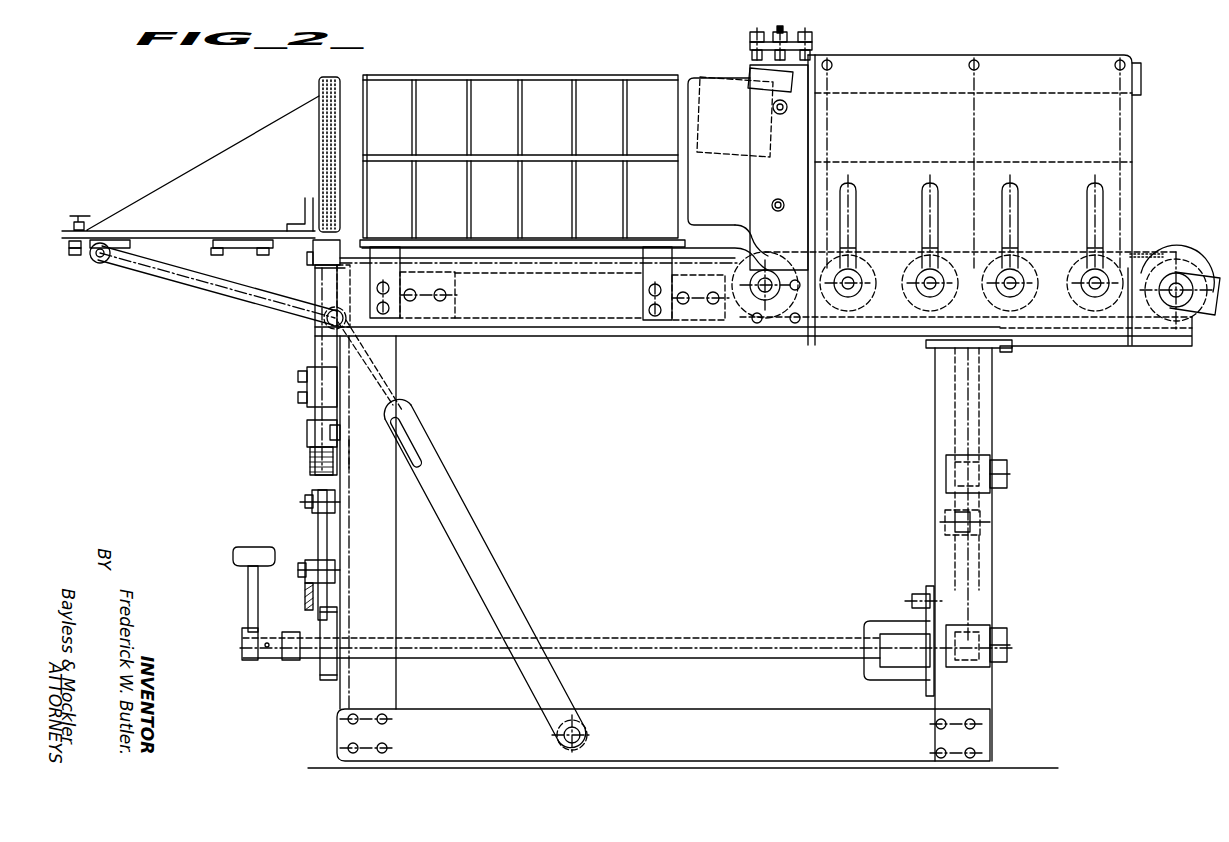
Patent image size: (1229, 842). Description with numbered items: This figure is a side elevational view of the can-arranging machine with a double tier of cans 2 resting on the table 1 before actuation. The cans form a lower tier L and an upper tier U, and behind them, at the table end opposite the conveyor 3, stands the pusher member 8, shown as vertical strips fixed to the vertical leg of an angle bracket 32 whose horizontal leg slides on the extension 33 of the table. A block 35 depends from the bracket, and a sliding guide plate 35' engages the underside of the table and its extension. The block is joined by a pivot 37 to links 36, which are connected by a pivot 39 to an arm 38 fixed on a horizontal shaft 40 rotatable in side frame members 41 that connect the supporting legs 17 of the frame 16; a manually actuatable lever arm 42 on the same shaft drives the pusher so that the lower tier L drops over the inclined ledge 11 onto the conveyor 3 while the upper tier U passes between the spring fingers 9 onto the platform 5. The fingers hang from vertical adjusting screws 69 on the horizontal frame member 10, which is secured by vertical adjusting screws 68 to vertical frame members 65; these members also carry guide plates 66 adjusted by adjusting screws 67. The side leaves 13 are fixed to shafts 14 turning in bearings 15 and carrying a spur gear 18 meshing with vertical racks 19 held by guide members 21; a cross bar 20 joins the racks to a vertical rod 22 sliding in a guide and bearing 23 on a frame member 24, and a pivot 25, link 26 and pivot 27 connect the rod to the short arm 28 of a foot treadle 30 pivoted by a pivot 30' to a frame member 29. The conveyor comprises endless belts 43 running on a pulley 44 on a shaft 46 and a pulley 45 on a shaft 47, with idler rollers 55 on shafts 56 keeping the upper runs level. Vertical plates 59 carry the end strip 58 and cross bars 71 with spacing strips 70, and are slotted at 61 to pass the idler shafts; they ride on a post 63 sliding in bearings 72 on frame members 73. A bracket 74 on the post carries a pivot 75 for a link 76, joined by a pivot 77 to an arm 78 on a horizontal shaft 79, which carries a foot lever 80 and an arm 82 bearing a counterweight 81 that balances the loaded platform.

The table 1 is at (604, 259).
The cans 2 is at (538, 177).
The conveyor 3 is at (1133, 250).
The platform 5 is at (1126, 165).
The pusher member 8 is at (319, 133).
The spring fingers 9 is at (712, 80).
The horizontal frame member 10 is at (752, 46).
The inclined ledge 11 is at (752, 238).
The side leaves 13 is at (563, 242).
The shafts 14 is at (539, 259).
The bearings 15 is at (447, 306).
The frame 16 is at (583, 338).
The supporting legs 17 is at (397, 578).
The spur gear 18 is at (335, 240).
The vertical racks 19 is at (315, 352).
The cross bar 20 is at (300, 386).
The guide members 21 is at (318, 278).
The vertical rod 22 is at (312, 458).
The guide and bearing 23 is at (307, 433).
The frame member 24 is at (347, 442).
The pivot 25 is at (305, 501).
The link 26 is at (318, 527).
The pivot 27 is at (304, 576).
The short arm 28 is at (303, 565).
The frame member 29 is at (326, 682).
The foot treadle 30 is at (291, 600).
The pivot 30' is at (274, 662).
The angle bracket 32 is at (316, 192).
The extension 33 is at (180, 236).
The block 35 is at (113, 227).
The sliding guide plate 35' is at (242, 227).
The links 36 is at (174, 282).
The pivot 37 is at (94, 262).
The arm 38 is at (390, 398).
The pivot 39 is at (326, 320).
The horizontal shaft 40 is at (578, 725).
The side frame members 41 is at (698, 715).
The lever arm 42 is at (493, 577).
The endless belts 43 is at (885, 245).
The pulley 44 is at (752, 322).
The pulley 45 is at (1186, 262).
The shaft 46 is at (766, 276).
The shaft 47 is at (1172, 300).
The idler rollers 55 is at (848, 312).
The shafts 56 is at (928, 312).
The end strip 58 is at (1038, 160).
The plates 59 is at (1052, 60).
The slots 61 is at (856, 188).
The post 63 is at (982, 395).
The vertical frame members 65 is at (805, 140).
The guide plates 66 is at (690, 132).
The adjusting screws 67 is at (787, 107).
The vertical adjusting screws 68 is at (750, 62).
The vertical adjusting screw 69 is at (779, 36).
The spacing strips 70 is at (1140, 90).
The cross bars 71 is at (835, 62).
The bearings 72 is at (946, 470).
The frame members 73 is at (996, 461).
The bracket 74 is at (985, 520).
The pivot 75 is at (928, 520).
The link 76 is at (928, 548).
The pivot 77 is at (918, 596).
The arm 78 is at (930, 665).
The horizontal shaft 79 is at (242, 641).
The foot lever 80 is at (236, 572).
The counterweight 81 is at (866, 628).
The arm 82 is at (893, 632).
The lower tier L is at (346, 182).
The upper tier U is at (459, 73).